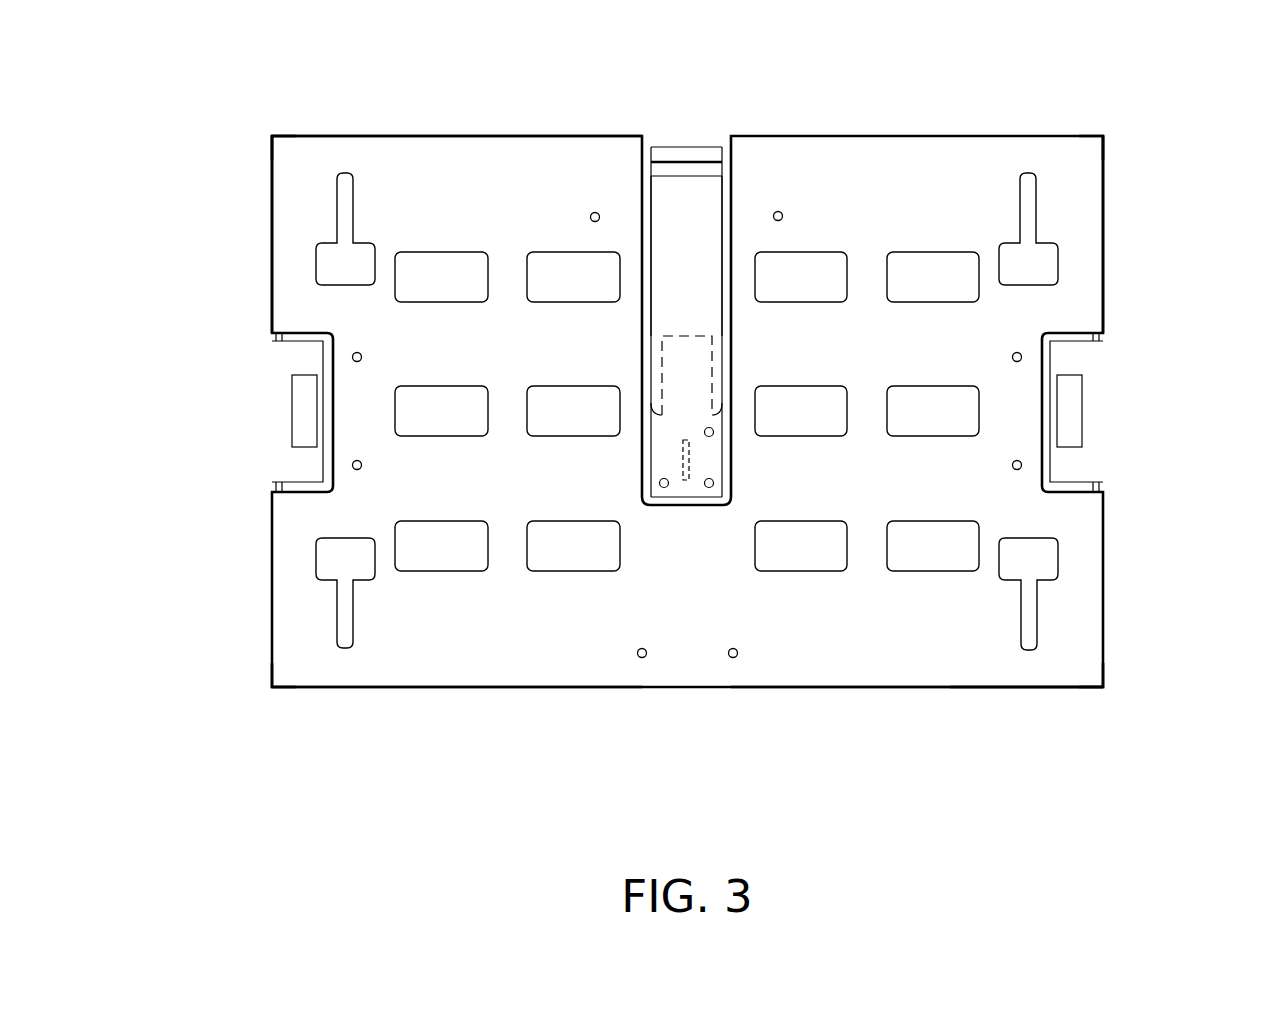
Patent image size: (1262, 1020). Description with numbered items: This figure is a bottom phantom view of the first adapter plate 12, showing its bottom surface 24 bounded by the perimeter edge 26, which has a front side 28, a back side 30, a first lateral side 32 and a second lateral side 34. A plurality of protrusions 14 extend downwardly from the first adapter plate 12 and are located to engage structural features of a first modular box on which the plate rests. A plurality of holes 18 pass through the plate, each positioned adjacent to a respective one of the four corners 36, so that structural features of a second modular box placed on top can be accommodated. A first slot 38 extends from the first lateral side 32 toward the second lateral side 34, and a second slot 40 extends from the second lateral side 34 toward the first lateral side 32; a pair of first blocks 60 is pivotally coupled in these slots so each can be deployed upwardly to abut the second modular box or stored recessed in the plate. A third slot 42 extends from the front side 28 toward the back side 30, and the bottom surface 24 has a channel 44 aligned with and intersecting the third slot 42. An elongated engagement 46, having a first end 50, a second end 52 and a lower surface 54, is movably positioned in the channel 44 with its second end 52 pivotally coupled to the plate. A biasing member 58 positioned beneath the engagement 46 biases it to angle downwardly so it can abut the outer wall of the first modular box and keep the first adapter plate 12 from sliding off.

The first adapter plate 12 is at (272, 134).
The protrusions 14 is at (455, 387).
The holes 18 is at (338, 273).
The bottom surface 24 is at (580, 649).
The perimeter edge 26 is at (1028, 687).
The front side 28 is at (595, 134).
The back side 30 is at (865, 687).
The first lateral side 32 is at (1104, 232).
The second lateral side 34 is at (272, 305).
The corners 36 is at (272, 134).
The first slot 38 is at (1043, 397).
The second slot 40 is at (332, 377).
The third slot 42 is at (648, 161).
The channel 44 is at (732, 206).
The engagement 46 is at (731, 457).
The first end 50 is at (687, 146).
The second end 52 is at (707, 498).
The lower surface 54 is at (703, 278).
The biasing member 58 is at (662, 371).
The first blocks 60 is at (270, 428).